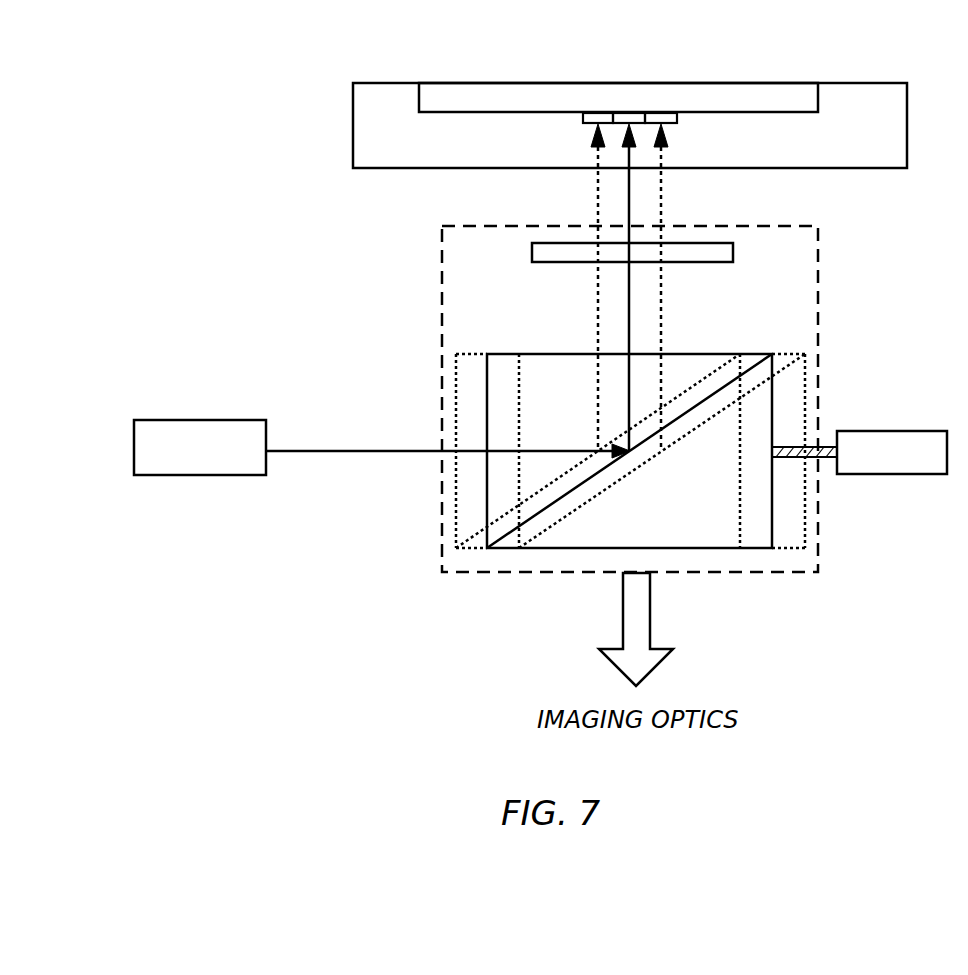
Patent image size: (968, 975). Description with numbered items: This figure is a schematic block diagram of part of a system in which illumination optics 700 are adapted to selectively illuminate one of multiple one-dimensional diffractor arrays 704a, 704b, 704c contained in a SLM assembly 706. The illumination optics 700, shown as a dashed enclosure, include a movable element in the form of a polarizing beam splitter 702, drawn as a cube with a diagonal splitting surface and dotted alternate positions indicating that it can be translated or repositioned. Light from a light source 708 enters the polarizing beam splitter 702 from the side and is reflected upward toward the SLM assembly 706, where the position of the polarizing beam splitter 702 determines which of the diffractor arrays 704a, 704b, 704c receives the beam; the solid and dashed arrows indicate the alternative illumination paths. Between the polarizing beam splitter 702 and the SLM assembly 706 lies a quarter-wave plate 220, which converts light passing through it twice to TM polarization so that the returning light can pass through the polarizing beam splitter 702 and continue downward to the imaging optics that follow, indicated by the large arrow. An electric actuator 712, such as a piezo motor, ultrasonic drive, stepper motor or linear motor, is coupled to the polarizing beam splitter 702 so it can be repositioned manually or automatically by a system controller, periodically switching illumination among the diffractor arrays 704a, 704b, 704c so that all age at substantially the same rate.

The illumination optics 700 is at (441, 250).
The polarizing beam splitter 702 is at (708, 354).
The 1D diffractor array 704a is at (583, 122).
The 1D diffractor array 704b is at (630, 113).
The 1D diffractor array 704c is at (677, 123).
The SLM assembly 706 is at (883, 112).
The light source 708 is at (218, 459).
The electric actuator 712 is at (912, 464).
The quarter-wave plate 220 is at (733, 258).